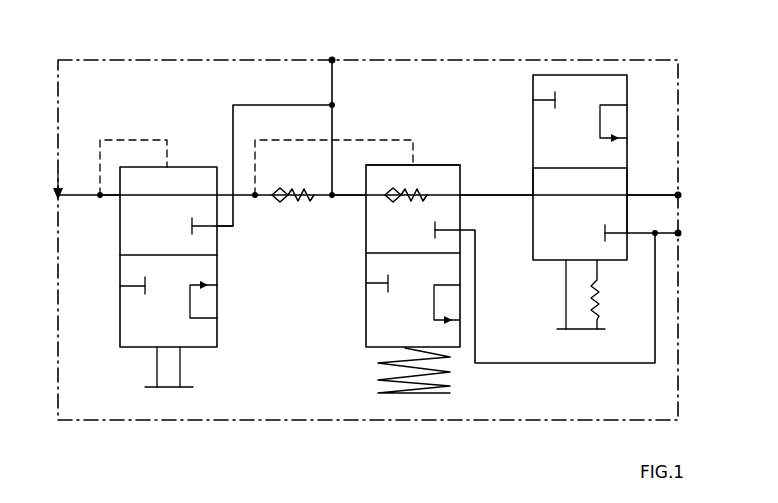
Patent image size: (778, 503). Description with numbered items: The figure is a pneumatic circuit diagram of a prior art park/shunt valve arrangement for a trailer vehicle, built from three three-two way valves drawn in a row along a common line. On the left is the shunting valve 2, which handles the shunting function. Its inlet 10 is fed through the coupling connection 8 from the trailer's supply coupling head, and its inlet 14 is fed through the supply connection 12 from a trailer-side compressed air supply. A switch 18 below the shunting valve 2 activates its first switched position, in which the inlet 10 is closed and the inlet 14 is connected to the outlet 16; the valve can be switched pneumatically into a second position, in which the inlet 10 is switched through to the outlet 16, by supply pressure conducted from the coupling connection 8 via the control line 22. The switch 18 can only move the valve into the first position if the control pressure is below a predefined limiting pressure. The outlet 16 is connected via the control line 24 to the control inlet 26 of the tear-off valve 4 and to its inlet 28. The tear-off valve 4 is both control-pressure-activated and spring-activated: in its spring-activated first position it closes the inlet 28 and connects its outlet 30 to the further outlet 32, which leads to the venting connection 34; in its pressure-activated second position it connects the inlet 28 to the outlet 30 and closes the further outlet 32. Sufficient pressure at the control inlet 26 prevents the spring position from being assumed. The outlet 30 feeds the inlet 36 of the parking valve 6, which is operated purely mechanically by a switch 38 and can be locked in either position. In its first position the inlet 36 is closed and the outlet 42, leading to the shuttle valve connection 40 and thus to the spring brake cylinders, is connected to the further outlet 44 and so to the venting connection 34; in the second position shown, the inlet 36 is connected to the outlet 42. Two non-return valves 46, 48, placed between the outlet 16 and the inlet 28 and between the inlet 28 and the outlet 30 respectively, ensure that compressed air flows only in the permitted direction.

The shunting valve 2 is at (132, 341).
The tear-off valve 4 is at (366, 342).
The parking valve 6 is at (546, 262).
The coupling connection 8 is at (55, 195).
The inlet 10 is at (119, 199).
The supply connection 12 is at (338, 62).
The inlet 14 is at (223, 228).
The outlet 16 is at (222, 194).
The switch 18 is at (170, 380).
The control line 22 is at (141, 139).
The control line 24 is at (352, 140).
The control inlet 26 is at (416, 166).
The inlet 28 is at (366, 201).
The outlet 30 is at (462, 197).
The further outlet 32 is at (462, 231).
The venting connection 34 is at (680, 233).
The inlet 36 is at (532, 192).
The switch 38 is at (586, 322).
The shuttle valve connection 40 is at (686, 191).
The outlet 42 is at (629, 194).
The further outlet 44 is at (631, 232).
The non-return valve 46 is at (297, 204).
The non-return valve 48 is at (405, 205).